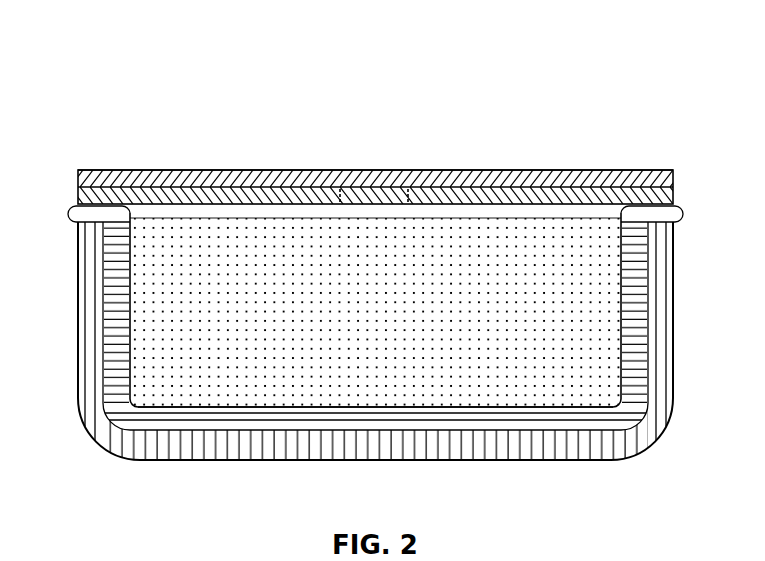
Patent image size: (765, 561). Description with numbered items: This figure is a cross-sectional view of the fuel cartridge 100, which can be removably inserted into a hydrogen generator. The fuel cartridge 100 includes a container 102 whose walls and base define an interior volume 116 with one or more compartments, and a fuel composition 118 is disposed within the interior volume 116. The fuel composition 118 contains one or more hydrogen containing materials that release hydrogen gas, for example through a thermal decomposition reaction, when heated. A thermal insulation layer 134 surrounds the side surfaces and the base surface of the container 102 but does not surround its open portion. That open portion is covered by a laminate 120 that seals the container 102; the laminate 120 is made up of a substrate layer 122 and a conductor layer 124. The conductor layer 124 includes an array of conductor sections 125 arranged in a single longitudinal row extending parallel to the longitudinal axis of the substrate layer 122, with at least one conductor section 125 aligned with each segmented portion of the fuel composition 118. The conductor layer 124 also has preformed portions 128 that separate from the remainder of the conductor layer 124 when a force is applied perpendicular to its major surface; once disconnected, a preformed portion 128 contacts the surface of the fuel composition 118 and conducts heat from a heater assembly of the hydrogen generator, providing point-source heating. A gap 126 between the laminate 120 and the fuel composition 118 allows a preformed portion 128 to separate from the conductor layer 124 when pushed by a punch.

The fuel cartridge 100 is at (116, 44).
The container 102 is at (117, 348).
The interior volume 116 is at (488, 228).
The fuel composition 118 is at (222, 392).
The laminate 120 is at (690, 170).
The substrate layer 122 is at (231, 188).
The conductor layer 124 is at (178, 172).
The conductor section 125 is at (570, 170).
The gap 126 is at (312, 198).
The preformed portion 128 is at (393, 188).
The thermal insulation layer 134 is at (90, 295).